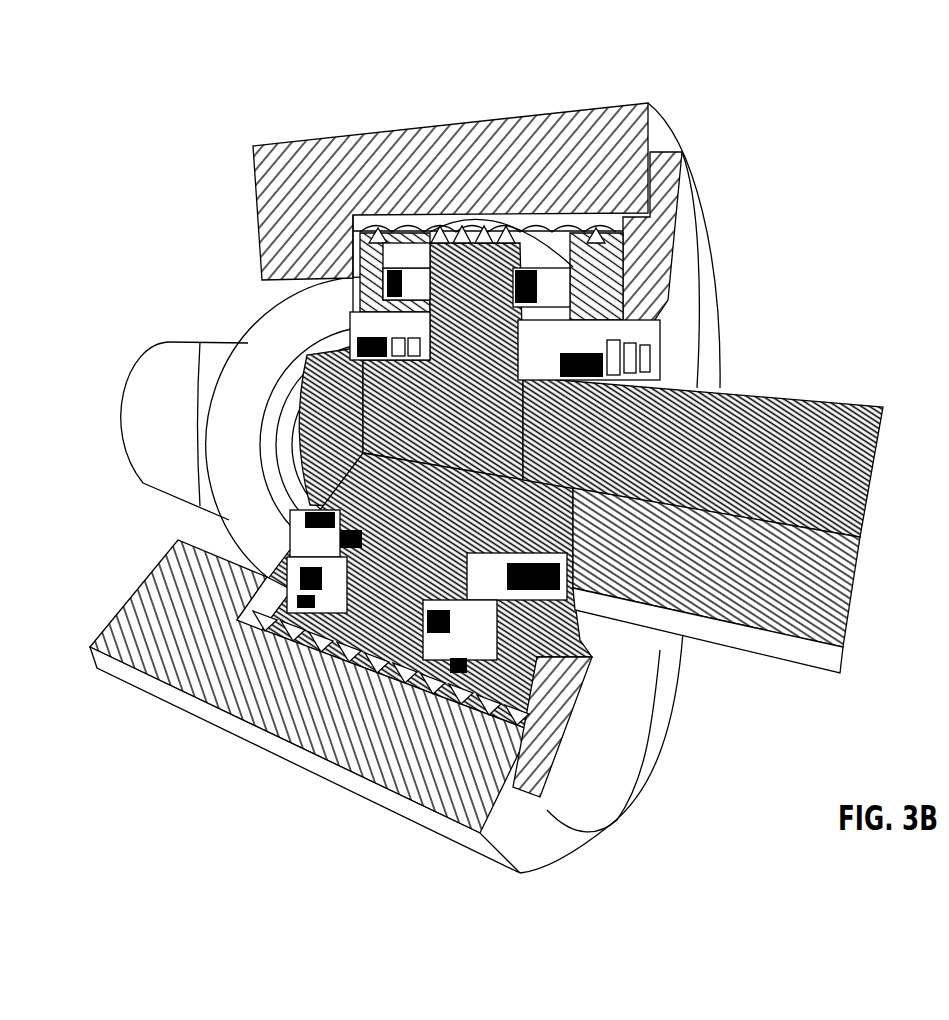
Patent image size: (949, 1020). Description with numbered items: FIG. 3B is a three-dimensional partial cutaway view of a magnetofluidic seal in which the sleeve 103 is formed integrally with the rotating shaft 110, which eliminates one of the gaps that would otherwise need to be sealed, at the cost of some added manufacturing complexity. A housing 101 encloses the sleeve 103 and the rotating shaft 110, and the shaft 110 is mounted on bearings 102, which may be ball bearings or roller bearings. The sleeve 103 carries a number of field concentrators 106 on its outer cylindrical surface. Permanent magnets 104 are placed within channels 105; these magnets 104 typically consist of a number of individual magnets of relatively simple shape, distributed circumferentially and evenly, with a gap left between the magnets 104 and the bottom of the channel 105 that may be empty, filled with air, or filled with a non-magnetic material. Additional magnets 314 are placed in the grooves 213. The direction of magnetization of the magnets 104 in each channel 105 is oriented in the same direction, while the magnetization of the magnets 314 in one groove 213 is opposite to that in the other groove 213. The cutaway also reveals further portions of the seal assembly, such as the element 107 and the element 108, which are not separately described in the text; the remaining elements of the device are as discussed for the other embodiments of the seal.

The housing 101 is at (283, 203).
The bearings 102 is at (231, 328).
The sleeve 103 is at (496, 214).
The permanent magnets 104 is at (392, 328).
The channels 105 is at (473, 585).
The field concentrators 106 is at (347, 650).
The upper stator 107 is at (553, 287).
The flange 108 is at (700, 225).
The rotating shaft 110 is at (817, 410).
The grooves 213 is at (408, 254).
The additional magnets 314 is at (448, 280).